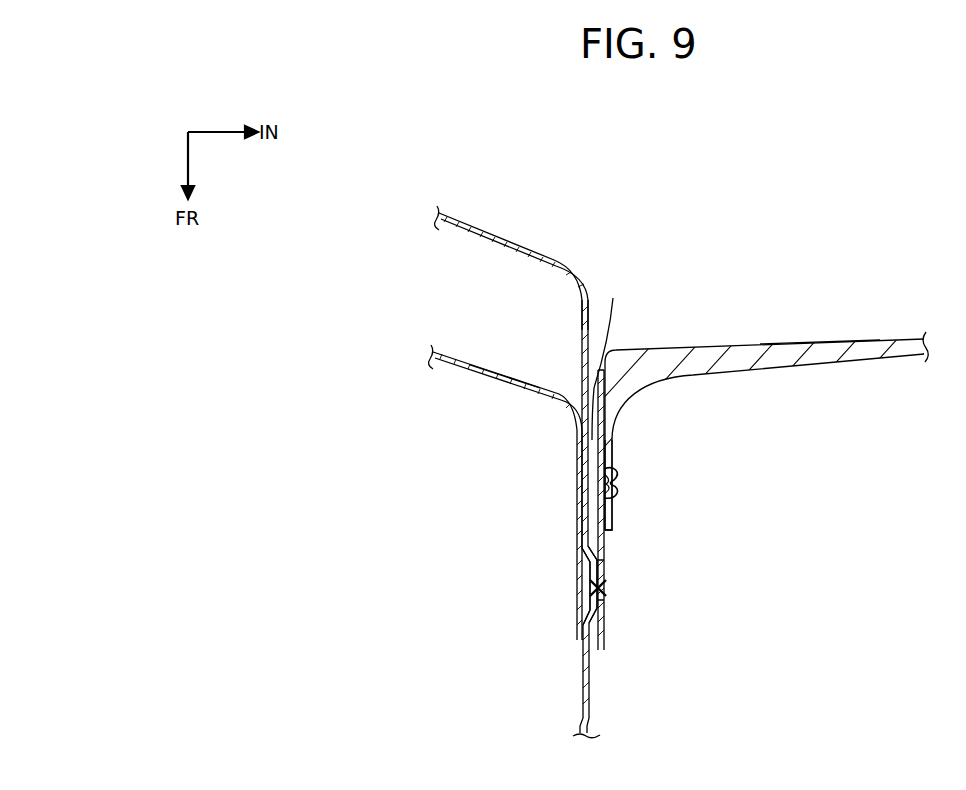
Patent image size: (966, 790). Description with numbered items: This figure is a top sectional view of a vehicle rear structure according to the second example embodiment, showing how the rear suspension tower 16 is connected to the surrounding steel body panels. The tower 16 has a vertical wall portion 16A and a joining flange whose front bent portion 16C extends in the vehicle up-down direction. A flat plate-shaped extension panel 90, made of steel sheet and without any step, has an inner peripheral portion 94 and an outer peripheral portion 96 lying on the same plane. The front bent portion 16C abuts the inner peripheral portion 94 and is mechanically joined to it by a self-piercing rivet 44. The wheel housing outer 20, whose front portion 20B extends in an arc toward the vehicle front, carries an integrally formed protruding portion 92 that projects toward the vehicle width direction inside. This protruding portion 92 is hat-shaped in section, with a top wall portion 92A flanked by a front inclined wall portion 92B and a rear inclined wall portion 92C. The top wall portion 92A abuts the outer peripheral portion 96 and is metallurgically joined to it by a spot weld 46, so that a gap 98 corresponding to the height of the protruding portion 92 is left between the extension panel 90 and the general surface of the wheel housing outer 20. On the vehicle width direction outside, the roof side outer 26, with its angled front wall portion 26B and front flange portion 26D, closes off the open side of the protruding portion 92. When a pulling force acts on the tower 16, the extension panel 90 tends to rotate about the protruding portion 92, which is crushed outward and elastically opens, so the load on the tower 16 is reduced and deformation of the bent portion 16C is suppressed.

The rear suspension tower 16 is at (854, 366).
The vertical wall portion 16A is at (806, 362).
The front bent portion 16C is at (612, 446).
The wheel housing outer 20 is at (457, 236).
The front portion 20B is at (582, 333).
The roof side outer 26 is at (460, 376).
The front wall portion 26B is at (495, 383).
The front flange portion 26D is at (577, 490).
The self-piercing rivet 44 is at (618, 483).
The spot weld 46 is at (607, 588).
The extension panel 90 is at (590, 438).
The protruding portion 92 is at (580, 614).
The top wall portion 92A is at (600, 607).
The front inclined wall portion 92B is at (602, 627).
The rear inclined wall portion 92C is at (598, 550).
The inner peripheral portion 94 is at (604, 430).
The outer peripheral portion 96 is at (604, 572).
The gap 98 is at (634, 294).